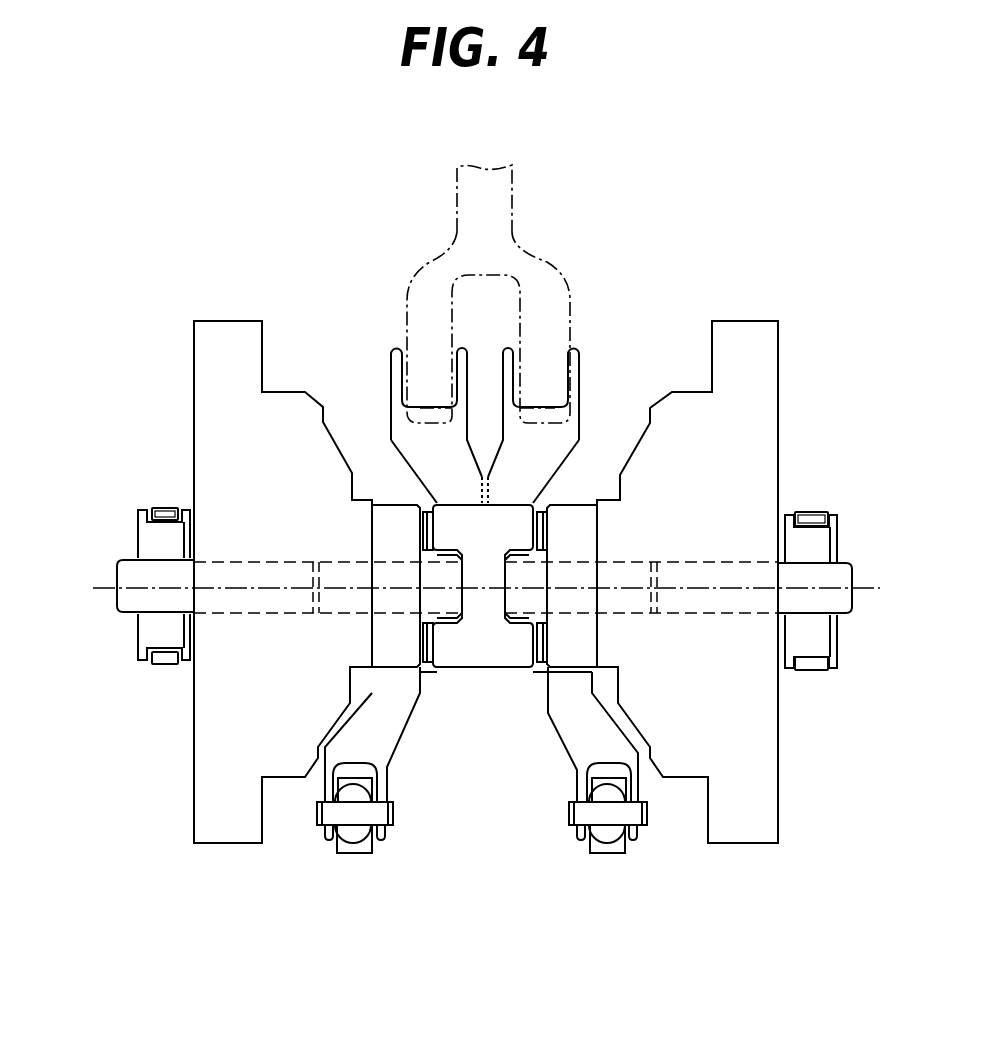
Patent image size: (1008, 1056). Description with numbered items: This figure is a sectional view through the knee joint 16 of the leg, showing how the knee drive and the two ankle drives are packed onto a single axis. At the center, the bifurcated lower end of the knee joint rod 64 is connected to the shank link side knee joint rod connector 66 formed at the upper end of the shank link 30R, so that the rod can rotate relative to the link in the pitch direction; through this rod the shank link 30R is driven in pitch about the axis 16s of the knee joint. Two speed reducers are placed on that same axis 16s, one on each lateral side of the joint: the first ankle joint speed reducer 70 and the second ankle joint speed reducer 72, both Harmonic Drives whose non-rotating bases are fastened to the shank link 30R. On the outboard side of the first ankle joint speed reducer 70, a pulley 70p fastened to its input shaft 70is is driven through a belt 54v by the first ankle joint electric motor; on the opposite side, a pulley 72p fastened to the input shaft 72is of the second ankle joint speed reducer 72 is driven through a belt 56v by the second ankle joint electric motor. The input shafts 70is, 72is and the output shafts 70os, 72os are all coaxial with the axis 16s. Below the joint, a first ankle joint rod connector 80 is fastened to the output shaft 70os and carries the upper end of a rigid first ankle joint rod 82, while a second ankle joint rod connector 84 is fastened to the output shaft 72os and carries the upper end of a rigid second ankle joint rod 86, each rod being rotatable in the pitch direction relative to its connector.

The knee joint 16 is at (724, 244).
The axis of the knee joint 16s is at (102, 588).
The knee joint rod 64 is at (465, 199).
The shank link side knee joint rod connector 66 is at (390, 380).
The first ankle joint speed reducer 70 is at (300, 402).
The output shaft of the first ankle joint speed reducer 70os is at (402, 562).
The pulley 70p is at (145, 533).
The input shaft of the first ankle joint speed reducer 70is is at (130, 602).
The belt 54v is at (162, 508).
The second ankle joint speed reducer 72 is at (682, 403).
The output shaft of the second ankle joint speed reducer 72os is at (570, 572).
The pulley 72p is at (830, 538).
The input shaft of the second ankle joint speed reducer 72is is at (837, 602).
The belt 56v is at (808, 517).
The shank link 30R is at (487, 653).
The first ankle joint rod connector 80 is at (390, 735).
The first ankle joint rod 82 is at (353, 833).
The second ankle joint rod connector 84 is at (568, 728).
The second ankle joint rod 86 is at (607, 833).